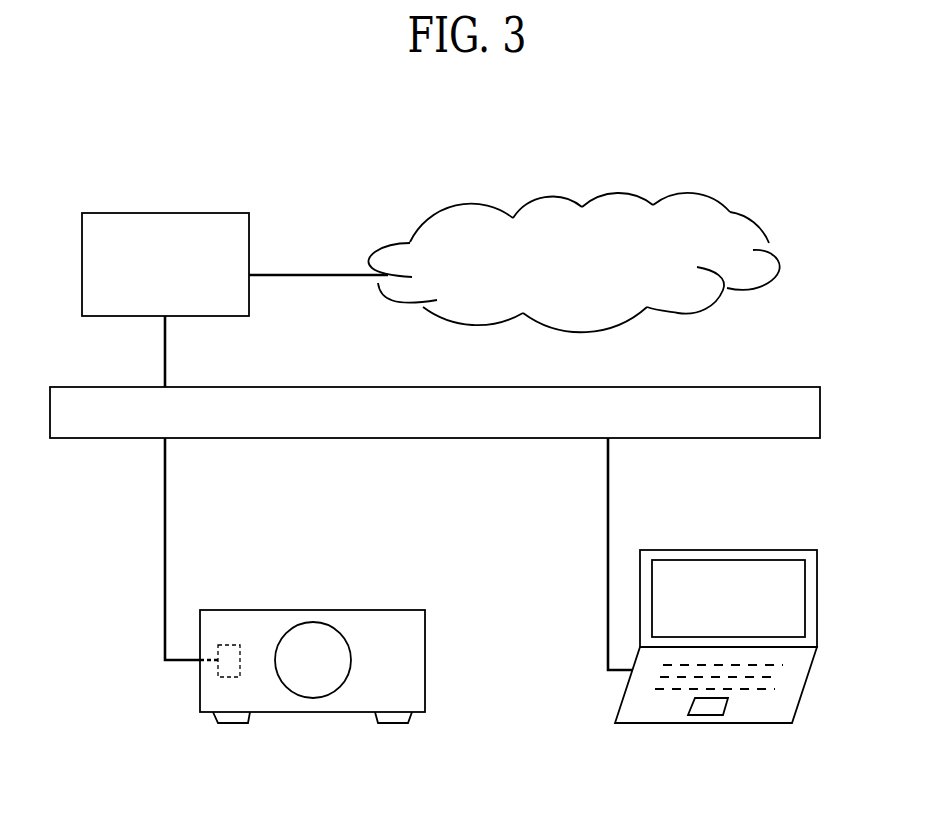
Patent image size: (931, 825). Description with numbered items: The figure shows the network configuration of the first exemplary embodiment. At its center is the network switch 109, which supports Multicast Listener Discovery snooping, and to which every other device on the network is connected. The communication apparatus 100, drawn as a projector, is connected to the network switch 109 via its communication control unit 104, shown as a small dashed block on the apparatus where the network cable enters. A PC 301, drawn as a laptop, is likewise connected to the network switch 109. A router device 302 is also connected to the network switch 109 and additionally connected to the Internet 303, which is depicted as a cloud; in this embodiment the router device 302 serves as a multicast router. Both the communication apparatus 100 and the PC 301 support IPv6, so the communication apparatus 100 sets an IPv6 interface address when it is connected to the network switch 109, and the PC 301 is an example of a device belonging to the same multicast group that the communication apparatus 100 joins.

The communication apparatus 100 is at (348, 610).
The communication control unit 104 is at (228, 677).
The network switch 109 is at (740, 387).
The PC 301 is at (770, 550).
The router device 302 is at (190, 213).
The Internet 303 is at (632, 195).